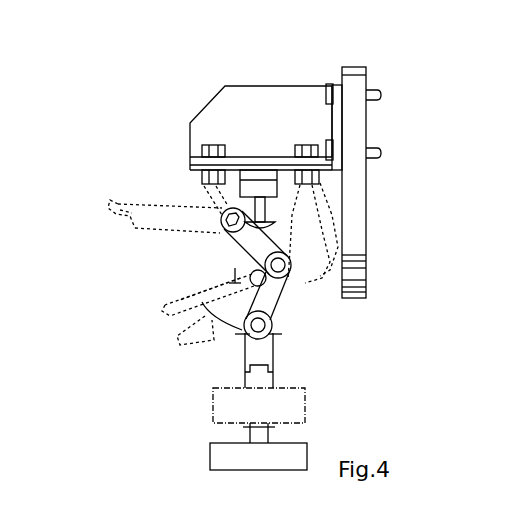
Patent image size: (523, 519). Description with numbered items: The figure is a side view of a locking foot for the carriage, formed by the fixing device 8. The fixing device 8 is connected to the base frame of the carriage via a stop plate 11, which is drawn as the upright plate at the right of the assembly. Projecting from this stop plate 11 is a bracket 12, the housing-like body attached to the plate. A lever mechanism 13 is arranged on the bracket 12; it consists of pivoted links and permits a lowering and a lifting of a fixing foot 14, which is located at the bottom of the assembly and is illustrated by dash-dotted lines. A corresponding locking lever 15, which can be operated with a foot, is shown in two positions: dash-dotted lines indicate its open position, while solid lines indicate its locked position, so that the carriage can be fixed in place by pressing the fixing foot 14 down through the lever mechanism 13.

The fixing device 8 is at (230, 152).
The stop plate 11 is at (392, 182).
The bracket 12 is at (255, 96).
The lever mechanism 13 is at (168, 309).
The fixing foot 14 is at (228, 476).
The locking lever 15 is at (144, 226).